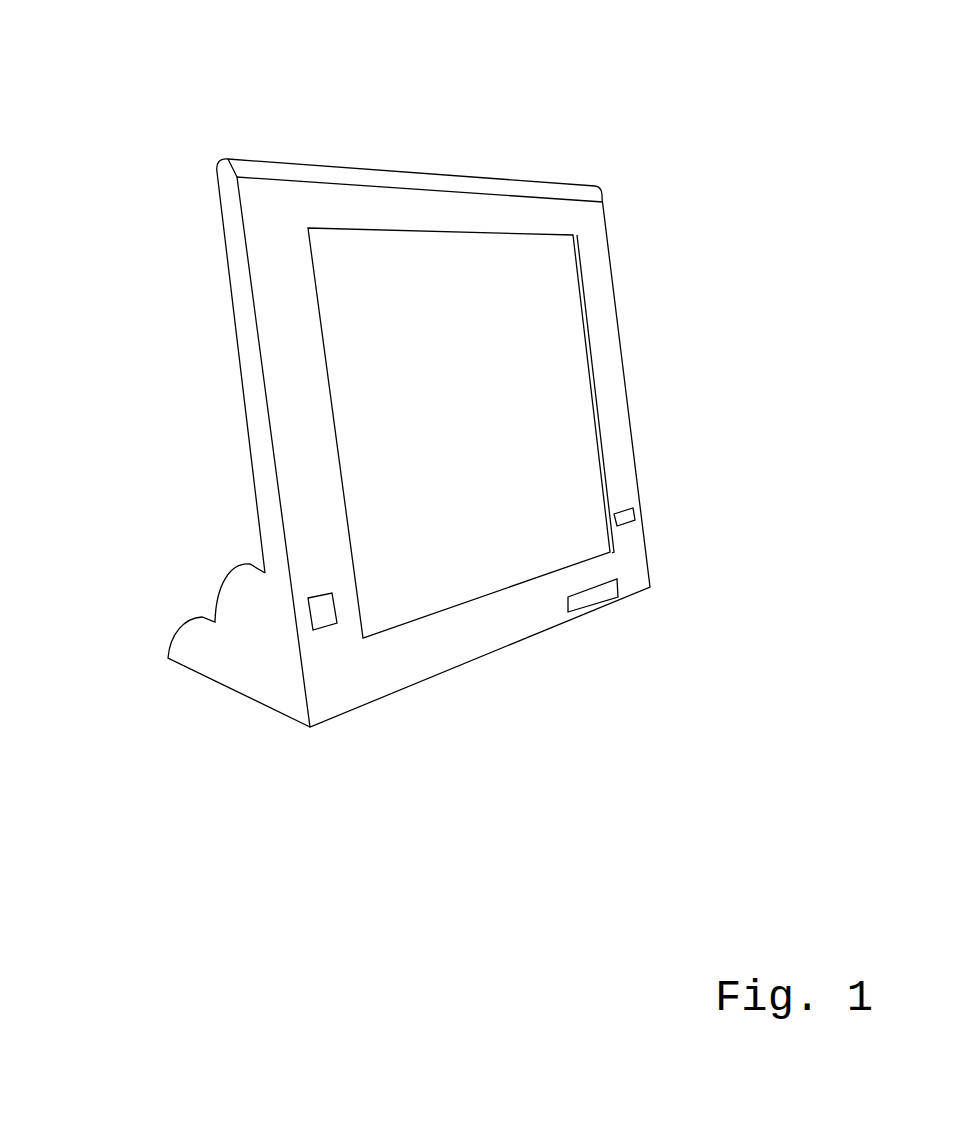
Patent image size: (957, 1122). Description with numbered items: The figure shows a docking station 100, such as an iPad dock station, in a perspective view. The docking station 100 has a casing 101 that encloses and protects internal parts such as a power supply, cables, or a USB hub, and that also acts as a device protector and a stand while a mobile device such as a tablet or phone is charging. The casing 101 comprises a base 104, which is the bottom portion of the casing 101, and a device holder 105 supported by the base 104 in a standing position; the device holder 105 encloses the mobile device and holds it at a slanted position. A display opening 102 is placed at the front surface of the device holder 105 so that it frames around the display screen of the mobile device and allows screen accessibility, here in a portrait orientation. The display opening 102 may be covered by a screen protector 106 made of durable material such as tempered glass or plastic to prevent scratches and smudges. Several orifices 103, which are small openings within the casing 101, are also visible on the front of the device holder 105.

The docking station 100 is at (417, 374).
The casing 101 is at (227, 298).
The display opening 102 is at (583, 325).
The orifices 103 is at (597, 600).
The base 104 is at (225, 673).
The device holder 105 is at (390, 208).
The screen protector 106 is at (527, 272).